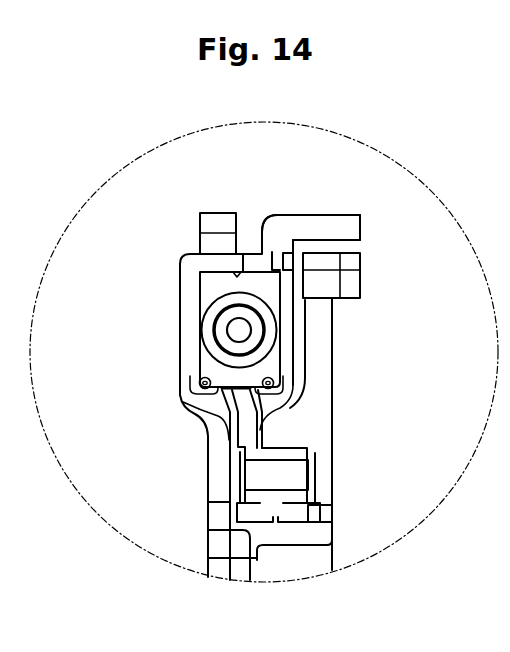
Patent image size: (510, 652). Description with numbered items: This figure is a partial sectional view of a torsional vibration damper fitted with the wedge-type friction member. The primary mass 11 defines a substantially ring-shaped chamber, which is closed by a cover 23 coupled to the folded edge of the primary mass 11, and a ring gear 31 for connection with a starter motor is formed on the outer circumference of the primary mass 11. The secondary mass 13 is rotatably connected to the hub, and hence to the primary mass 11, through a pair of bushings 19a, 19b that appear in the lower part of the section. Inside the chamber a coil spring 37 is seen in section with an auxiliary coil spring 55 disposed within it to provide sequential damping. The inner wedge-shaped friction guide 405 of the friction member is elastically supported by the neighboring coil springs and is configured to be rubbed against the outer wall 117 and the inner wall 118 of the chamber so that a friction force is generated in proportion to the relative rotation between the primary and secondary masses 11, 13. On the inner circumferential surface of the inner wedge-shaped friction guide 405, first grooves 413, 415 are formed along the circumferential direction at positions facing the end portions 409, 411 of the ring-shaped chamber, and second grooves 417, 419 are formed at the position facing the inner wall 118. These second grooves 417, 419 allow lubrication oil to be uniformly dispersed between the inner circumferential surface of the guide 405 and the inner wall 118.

The primary mass 11 is at (180, 317).
The secondary mass 13 is at (332, 348).
The bushing 19a is at (333, 521).
The bushing 19b is at (212, 528).
The cover 23 is at (287, 330).
The ring gear 31 is at (200, 244).
The coil spring 37 is at (285, 313).
The auxiliary coil spring 55 is at (207, 313).
The outer wall 117 is at (240, 270).
The inner wall 118 is at (196, 385).
The inner wedge-shaped friction guide 405 is at (203, 285).
The end portion of the ring-shaped chamber 409 is at (200, 392).
The end portion of the ring-shaped chamber 411 is at (283, 405).
The first groove 413 is at (210, 372).
The first groove 415 is at (285, 374).
The second groove 417 is at (199, 383).
The second groove 419 is at (275, 387).